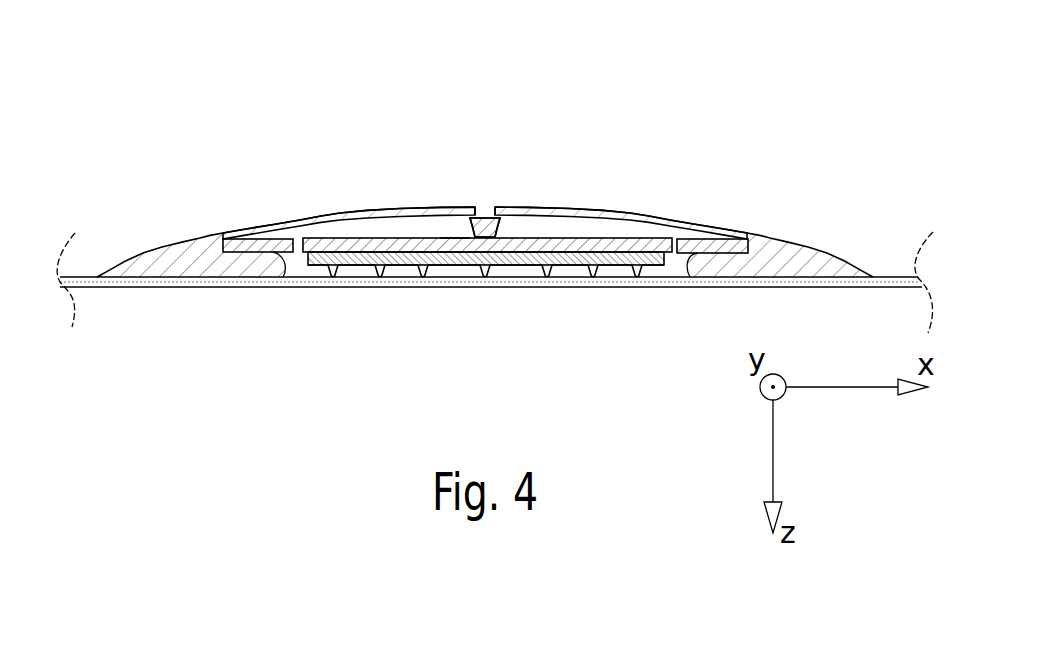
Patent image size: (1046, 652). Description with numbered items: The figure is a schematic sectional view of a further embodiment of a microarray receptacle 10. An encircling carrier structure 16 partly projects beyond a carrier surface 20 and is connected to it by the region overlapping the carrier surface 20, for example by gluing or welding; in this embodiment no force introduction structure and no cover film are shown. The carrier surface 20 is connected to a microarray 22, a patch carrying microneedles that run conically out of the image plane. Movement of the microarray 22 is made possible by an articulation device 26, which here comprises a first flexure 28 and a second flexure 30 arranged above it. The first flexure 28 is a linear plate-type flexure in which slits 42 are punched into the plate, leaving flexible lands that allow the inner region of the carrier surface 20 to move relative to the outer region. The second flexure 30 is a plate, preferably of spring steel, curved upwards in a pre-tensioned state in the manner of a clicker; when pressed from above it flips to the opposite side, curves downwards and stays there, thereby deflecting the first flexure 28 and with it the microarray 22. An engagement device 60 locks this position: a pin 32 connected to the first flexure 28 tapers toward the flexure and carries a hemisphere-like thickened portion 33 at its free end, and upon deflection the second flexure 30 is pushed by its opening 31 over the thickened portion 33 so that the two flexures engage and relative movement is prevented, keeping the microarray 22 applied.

The microarray receptacle 10 is at (215, 133).
The carrier structure 16 is at (181, 241).
The carrier surface 20 is at (392, 246).
The microarray 22 is at (353, 278).
The articulation device 26 is at (680, 180).
The first flexure 28 is at (702, 247).
The second flexure 30 is at (627, 215).
The opening 31 is at (492, 207).
The pin 32 is at (478, 217).
The thickened portion 33 is at (497, 222).
The slit 42 is at (665, 256).
The engagement device 60 is at (468, 232).